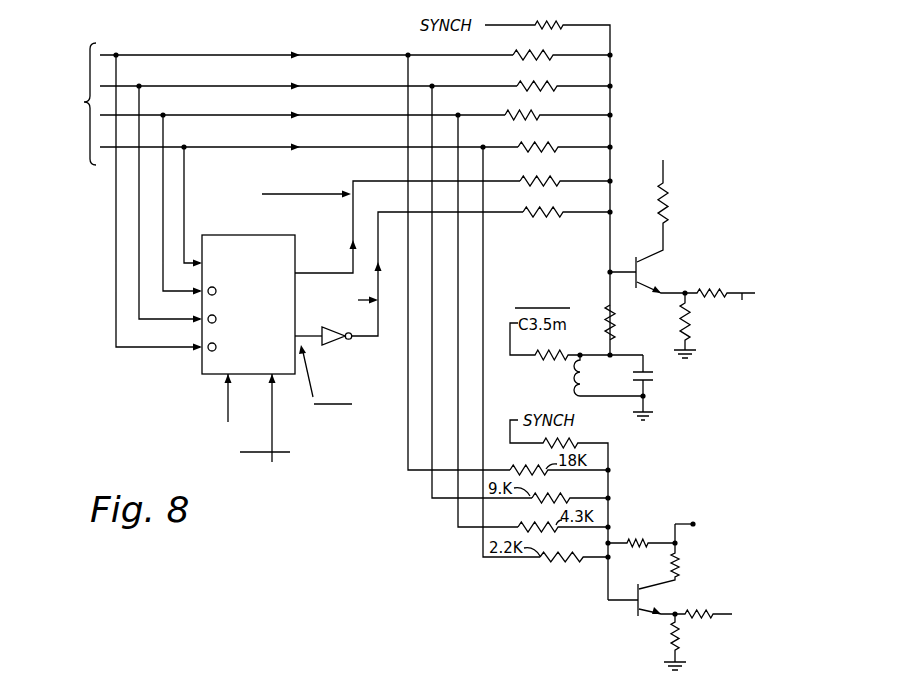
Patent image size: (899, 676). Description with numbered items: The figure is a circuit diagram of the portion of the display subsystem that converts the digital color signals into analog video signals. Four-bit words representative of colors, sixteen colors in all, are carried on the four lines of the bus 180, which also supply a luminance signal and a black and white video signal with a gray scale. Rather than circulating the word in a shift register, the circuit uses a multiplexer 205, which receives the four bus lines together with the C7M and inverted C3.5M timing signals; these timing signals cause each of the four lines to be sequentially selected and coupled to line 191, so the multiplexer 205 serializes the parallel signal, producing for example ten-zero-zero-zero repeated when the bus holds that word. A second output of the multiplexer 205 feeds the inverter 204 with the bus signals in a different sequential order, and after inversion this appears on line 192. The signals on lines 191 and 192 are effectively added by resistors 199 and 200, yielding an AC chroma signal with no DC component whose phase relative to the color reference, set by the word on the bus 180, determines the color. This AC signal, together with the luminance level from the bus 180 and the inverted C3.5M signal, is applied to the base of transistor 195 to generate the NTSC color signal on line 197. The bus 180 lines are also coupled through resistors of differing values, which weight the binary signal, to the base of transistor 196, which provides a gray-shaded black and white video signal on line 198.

The bus 180 is at (83, 101).
The line 191 is at (352, 217).
The line 192 is at (376, 310).
The transistor 195 is at (652, 273).
The transistor 196 is at (655, 603).
The line 197 is at (742, 297).
The line 198 is at (712, 612).
The resistor 199 is at (553, 178).
The resistor 200 is at (547, 215).
The inverter 204 is at (341, 343).
The multiplexer 205 is at (275, 354).